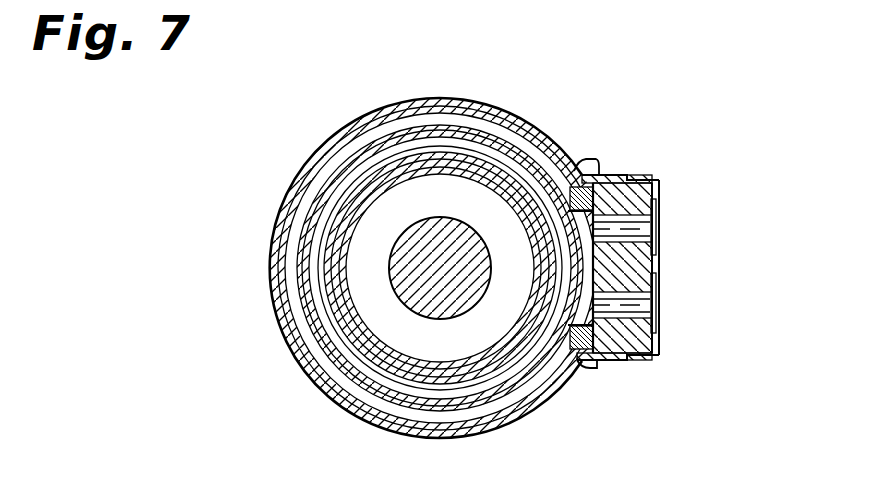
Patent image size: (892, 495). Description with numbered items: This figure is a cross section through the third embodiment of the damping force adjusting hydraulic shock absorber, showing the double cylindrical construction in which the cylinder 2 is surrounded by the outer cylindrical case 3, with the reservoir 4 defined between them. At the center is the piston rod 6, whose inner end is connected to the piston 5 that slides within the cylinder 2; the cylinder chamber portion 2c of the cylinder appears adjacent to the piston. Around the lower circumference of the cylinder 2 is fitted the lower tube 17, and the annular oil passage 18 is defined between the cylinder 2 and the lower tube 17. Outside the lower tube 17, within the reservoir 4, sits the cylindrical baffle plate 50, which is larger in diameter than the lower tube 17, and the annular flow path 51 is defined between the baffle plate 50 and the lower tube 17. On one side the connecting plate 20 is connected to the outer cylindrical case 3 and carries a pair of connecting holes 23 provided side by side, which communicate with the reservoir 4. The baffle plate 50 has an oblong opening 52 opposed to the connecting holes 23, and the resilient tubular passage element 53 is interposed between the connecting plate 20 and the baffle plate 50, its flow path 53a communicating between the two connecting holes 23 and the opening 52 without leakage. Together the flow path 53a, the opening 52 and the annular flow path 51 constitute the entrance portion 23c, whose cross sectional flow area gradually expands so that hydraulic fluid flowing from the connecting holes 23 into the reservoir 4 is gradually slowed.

The cylinder 2 is at (352, 394).
The rotor inner portion 2c is at (392, 403).
The outer cylindrical case 3 is at (373, 106).
The reservoir 4 is at (333, 164).
The piston 5 is at (503, 410).
The piston rod 6 is at (443, 226).
The lower tube 17 is at (312, 318).
The annular oil passage 18 is at (318, 342).
The connecting plate 20 is at (660, 178).
The connecting hole 23 is at (626, 238).
The entrance portion 23c is at (588, 369).
The baffle plate 50 is at (296, 270).
The annular flow path 51 is at (298, 246).
The opening 52 is at (582, 275).
The tubular passage element 53 is at (598, 168).
The flow path 53a is at (571, 164).